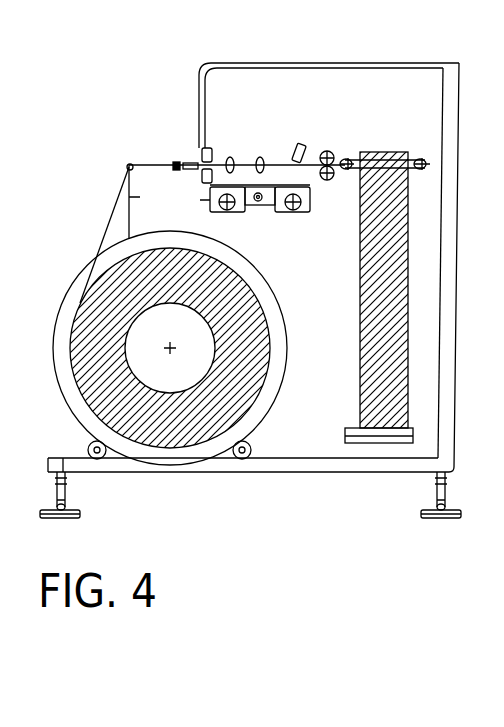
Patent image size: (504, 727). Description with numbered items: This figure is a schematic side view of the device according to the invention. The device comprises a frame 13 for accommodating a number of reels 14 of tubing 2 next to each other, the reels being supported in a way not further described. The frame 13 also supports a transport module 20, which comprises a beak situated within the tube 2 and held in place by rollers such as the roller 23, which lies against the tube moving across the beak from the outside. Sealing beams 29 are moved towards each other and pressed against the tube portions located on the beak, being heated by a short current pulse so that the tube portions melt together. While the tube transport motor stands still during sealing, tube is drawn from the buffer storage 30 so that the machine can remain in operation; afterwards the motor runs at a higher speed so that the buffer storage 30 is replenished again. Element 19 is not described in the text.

The tubing 2 is at (107, 228).
The frame 13 is at (290, 465).
The reel 14 is at (164, 441).
The guide roller 19 is at (236, 211).
The transport module 20 is at (307, 214).
The roller 23 is at (261, 158).
The sealing beam 29 is at (204, 150).
The buffer storage 30 is at (365, 416).